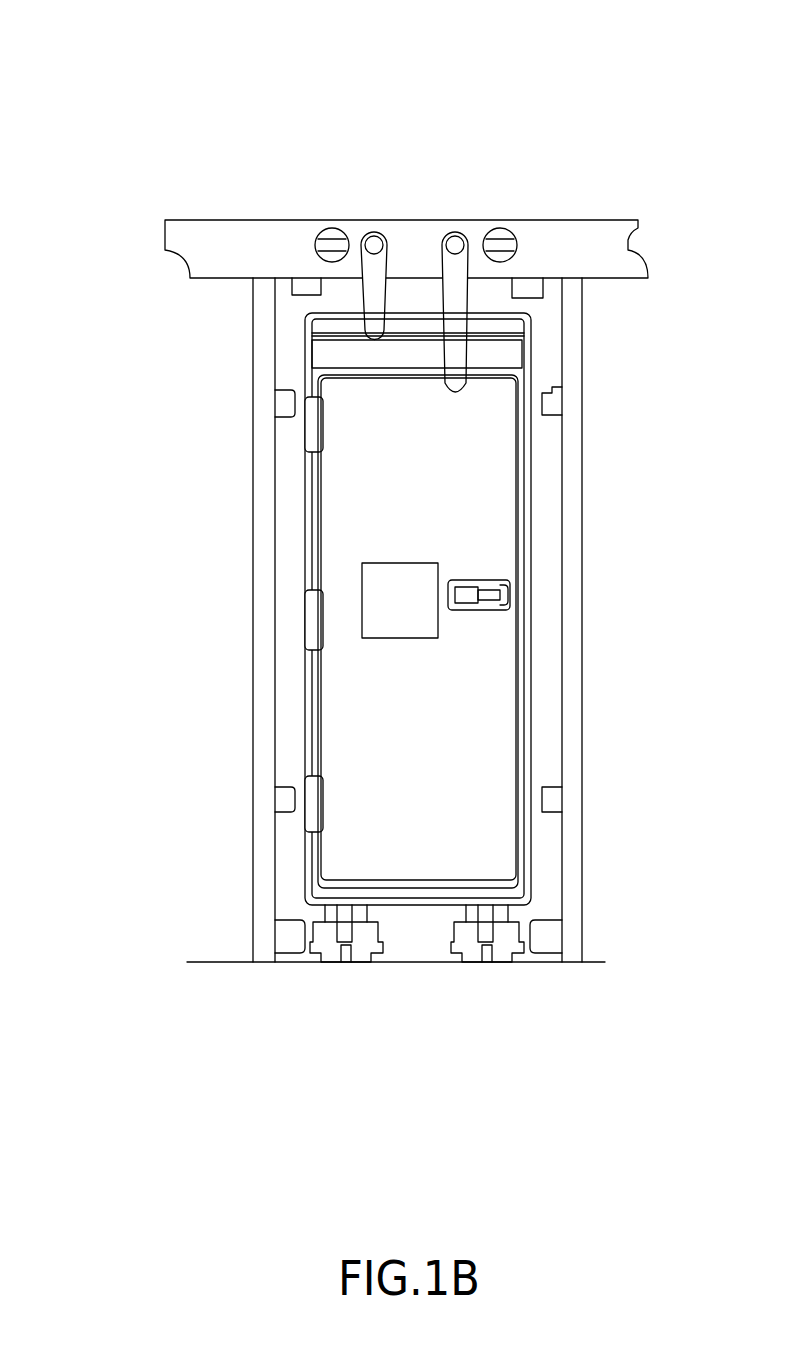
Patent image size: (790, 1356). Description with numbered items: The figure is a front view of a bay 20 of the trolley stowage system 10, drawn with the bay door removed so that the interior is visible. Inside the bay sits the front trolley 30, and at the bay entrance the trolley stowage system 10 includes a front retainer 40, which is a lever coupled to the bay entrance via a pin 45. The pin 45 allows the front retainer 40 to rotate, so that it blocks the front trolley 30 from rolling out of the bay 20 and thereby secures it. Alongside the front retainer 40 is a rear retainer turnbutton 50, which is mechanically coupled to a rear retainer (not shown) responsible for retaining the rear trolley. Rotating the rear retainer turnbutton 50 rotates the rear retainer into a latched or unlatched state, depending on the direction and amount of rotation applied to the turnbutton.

The trolley stowage system 10 is at (126, 56).
The bay 20 is at (287, 372).
The front trolley 30 is at (432, 833).
The front retainer 40 is at (532, 321).
The pin 45 is at (455, 232).
The rear retainer turnbutton 50 is at (374, 228).